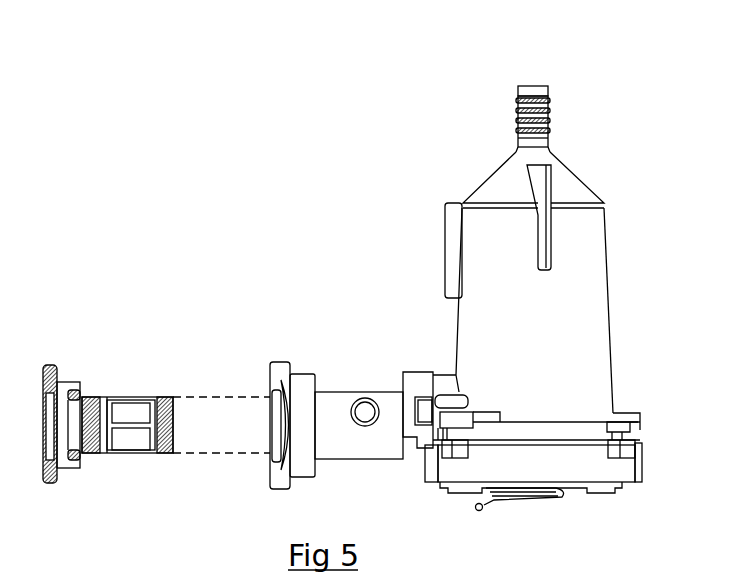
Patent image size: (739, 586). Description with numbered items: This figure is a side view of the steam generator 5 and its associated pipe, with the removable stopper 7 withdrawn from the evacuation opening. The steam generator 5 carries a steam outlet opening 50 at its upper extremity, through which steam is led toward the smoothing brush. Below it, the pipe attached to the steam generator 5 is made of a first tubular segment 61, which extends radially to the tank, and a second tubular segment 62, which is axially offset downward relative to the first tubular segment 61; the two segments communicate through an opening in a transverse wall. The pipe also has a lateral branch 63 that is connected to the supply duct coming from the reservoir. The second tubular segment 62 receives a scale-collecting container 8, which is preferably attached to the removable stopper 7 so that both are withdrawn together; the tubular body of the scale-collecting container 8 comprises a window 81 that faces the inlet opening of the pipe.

The steam generator 5 is at (597, 302).
The steam outlet opening 50 is at (527, 83).
The first tubular segment 61 is at (415, 372).
The second tubular segment 62 is at (338, 388).
The lateral branch 63 is at (367, 417).
The removable stopper 7 is at (65, 463).
The scale-collecting container 8 is at (125, 445).
The window 81 is at (137, 412).